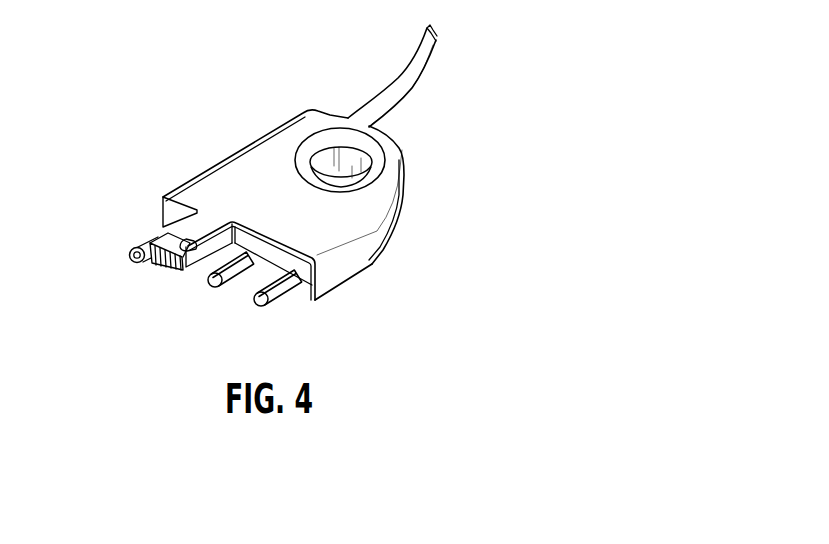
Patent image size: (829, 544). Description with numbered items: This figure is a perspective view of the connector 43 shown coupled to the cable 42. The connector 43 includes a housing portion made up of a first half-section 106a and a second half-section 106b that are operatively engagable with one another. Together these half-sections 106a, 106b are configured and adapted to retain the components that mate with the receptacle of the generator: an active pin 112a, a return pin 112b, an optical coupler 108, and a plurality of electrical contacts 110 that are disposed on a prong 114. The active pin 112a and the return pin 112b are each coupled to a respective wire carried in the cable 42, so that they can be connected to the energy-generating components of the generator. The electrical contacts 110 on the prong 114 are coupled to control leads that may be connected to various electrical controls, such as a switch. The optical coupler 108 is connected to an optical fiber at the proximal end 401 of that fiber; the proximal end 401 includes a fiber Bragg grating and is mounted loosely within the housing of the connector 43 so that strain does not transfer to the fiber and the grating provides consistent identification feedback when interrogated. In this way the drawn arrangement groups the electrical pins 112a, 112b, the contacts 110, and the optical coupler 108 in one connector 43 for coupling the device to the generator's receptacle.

The cable 42 is at (398, 78).
The connector 43 is at (234, 131).
The first half-section 106a is at (360, 267).
The second half-section 106b is at (378, 233).
The optical coupler 108 is at (137, 247).
The electrical contacts 110 is at (153, 260).
The active pin 112a is at (208, 282).
The return pin 112b is at (260, 304).
The prong 114 is at (143, 242).
The proximal end of the optical fiber 401 is at (129, 255).